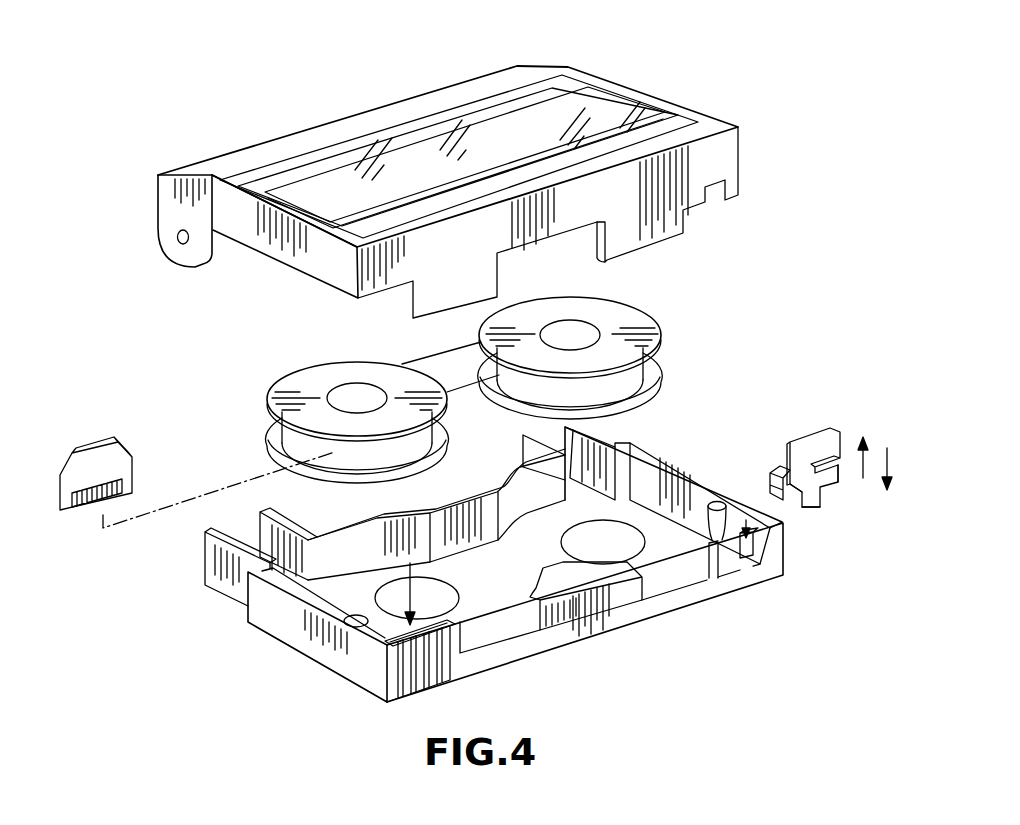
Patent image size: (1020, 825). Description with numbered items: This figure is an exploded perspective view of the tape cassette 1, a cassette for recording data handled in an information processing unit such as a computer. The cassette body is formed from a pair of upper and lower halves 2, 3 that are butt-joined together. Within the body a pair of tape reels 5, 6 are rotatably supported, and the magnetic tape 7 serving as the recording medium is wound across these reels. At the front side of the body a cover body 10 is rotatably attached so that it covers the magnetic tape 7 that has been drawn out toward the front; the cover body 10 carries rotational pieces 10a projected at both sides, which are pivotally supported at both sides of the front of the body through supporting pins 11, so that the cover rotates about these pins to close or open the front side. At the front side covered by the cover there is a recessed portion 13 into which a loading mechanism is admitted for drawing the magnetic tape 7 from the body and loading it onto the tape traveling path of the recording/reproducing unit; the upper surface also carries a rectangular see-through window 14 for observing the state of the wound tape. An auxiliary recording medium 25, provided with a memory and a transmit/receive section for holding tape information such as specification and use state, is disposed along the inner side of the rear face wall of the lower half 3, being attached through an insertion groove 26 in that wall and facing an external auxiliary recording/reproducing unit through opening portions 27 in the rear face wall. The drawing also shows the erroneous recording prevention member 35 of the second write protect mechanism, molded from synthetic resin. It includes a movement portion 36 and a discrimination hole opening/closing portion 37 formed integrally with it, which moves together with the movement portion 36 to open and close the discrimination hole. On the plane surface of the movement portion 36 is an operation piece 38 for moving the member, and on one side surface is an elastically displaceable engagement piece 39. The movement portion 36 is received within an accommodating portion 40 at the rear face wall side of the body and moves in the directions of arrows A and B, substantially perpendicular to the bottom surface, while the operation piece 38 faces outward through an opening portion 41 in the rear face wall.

The tape cassette 1 is at (752, 98).
The upper half 2 is at (684, 110).
The lower half 3 is at (290, 632).
The tape reel 5 is at (293, 372).
The tape reel 6 is at (650, 313).
The magnetic tape 7 is at (443, 362).
The cover body 10 is at (160, 203).
The rotational piece 10a is at (178, 252).
The supporting pin 11 is at (225, 592).
The recessed portion 13 is at (458, 497).
The window 14 is at (618, 103).
The auxiliary recording medium 25 is at (96, 458).
The insertion groove 26 is at (380, 630).
The opening portion 27 is at (430, 682).
The erroneous recording prevention member 35 is at (842, 437).
The movement portion 36 is at (818, 448).
The discrimination hole opening/closing portion 37 is at (805, 504).
The operation piece 38 is at (833, 473).
The engagement piece 39 is at (775, 465).
The accommodating portion 40 is at (723, 553).
The opening portion 41 is at (753, 543).